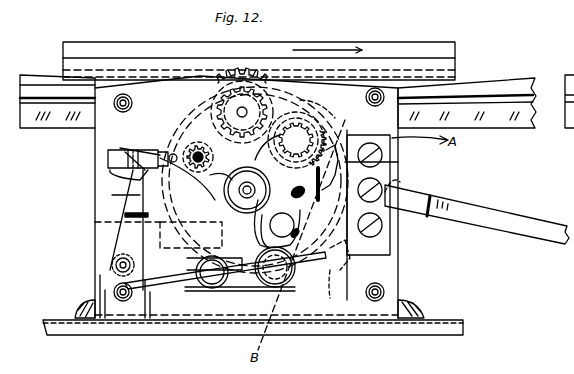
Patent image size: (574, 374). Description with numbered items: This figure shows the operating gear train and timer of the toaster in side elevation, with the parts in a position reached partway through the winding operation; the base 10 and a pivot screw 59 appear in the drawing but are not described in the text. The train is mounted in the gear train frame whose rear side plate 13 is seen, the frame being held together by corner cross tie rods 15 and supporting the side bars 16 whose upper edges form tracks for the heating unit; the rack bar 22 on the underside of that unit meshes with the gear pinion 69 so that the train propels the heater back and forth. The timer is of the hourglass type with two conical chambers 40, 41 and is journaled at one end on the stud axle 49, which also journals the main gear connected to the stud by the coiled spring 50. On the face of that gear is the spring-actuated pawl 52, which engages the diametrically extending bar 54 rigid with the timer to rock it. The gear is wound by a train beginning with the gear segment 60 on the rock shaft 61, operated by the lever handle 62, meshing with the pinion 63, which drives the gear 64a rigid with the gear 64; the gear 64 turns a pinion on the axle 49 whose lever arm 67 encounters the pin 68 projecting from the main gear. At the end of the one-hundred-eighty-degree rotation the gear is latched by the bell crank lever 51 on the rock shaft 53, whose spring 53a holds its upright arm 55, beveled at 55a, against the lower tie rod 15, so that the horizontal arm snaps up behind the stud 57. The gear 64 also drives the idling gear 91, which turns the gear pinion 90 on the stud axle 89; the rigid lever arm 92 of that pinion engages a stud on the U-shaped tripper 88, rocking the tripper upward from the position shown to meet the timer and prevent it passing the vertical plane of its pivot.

The base 10 is at (440, 320).
The side plate 13 is at (178, 308).
The corner cross tie rod 15 is at (123, 103).
The side bar 16 is at (40, 82).
The rack bar 22 is at (228, 70).
The conical chamber 40 is at (200, 96).
The conical chamber 41 is at (330, 289).
The stud axle 49 is at (246, 192).
The spring 50 is at (228, 196).
The bell crank lever 51 is at (170, 275).
The spring-actuated pawl 52 is at (277, 225).
The rock shaft 53 is at (158, 270).
The spring 53a is at (125, 215).
The diametrically extending bar 54 is at (150, 150).
The upright arm 55 is at (122, 195).
The beveled upper end 55a is at (115, 175).
The stud 57 is at (244, 108).
The pivot screw 59 is at (112, 264).
The gear segment 60 is at (392, 163).
The rock shaft 61 is at (420, 185).
The lever operating handle 62 is at (500, 221).
The pinion 63 is at (302, 174).
The gear 64 is at (333, 112).
The gear 64a is at (328, 158).
The lever arm 67 is at (298, 198).
The pin 68 is at (265, 147).
The gear pinion 69 is at (262, 90).
The tripper 88 is at (108, 155).
The stud axle 89 is at (197, 148).
The gear pinion 90 is at (200, 172).
The idling gear 91 is at (242, 112).
The lever arm 92 is at (188, 181).